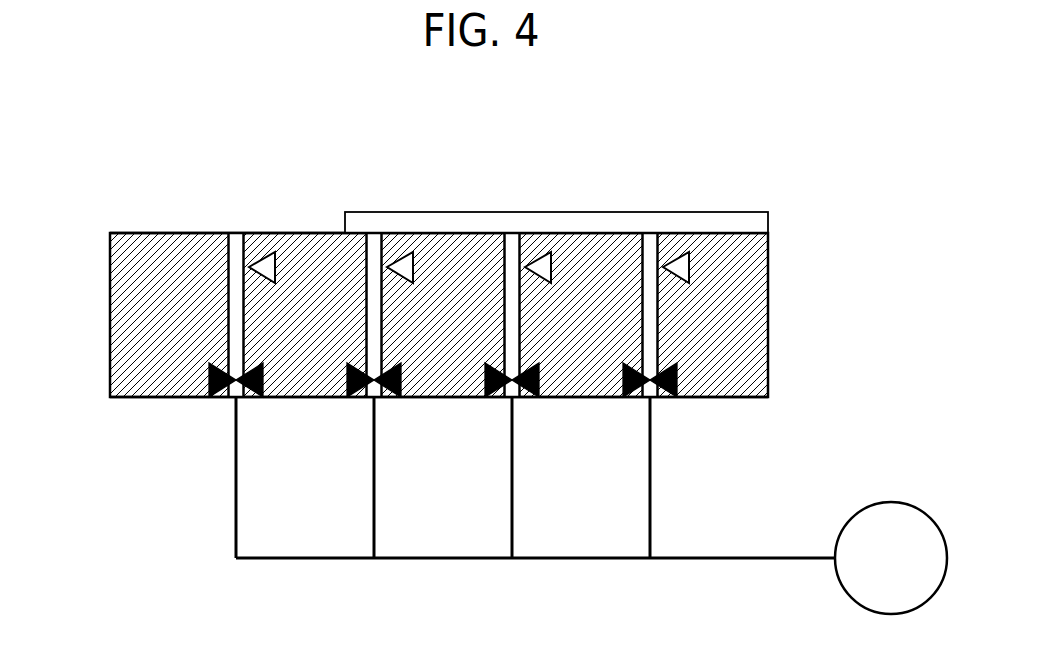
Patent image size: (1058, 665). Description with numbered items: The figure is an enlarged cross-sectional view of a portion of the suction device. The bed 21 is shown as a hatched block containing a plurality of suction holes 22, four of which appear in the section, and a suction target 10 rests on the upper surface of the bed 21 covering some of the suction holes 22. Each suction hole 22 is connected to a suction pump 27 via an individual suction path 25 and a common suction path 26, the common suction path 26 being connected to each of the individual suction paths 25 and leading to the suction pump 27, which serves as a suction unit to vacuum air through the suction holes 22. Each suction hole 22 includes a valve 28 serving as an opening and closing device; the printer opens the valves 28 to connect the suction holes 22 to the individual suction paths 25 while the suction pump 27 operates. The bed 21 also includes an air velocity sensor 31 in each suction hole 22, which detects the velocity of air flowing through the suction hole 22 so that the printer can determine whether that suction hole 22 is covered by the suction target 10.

The suction target 10 is at (492, 226).
The bed 21 is at (118, 331).
The suction hole 22 is at (370, 247).
The individual suction path 25 is at (234, 521).
The common suction path 26 is at (456, 560).
The suction pump 27 is at (890, 503).
The valve 28 is at (211, 379).
The air velocity sensor 31 is at (270, 264).